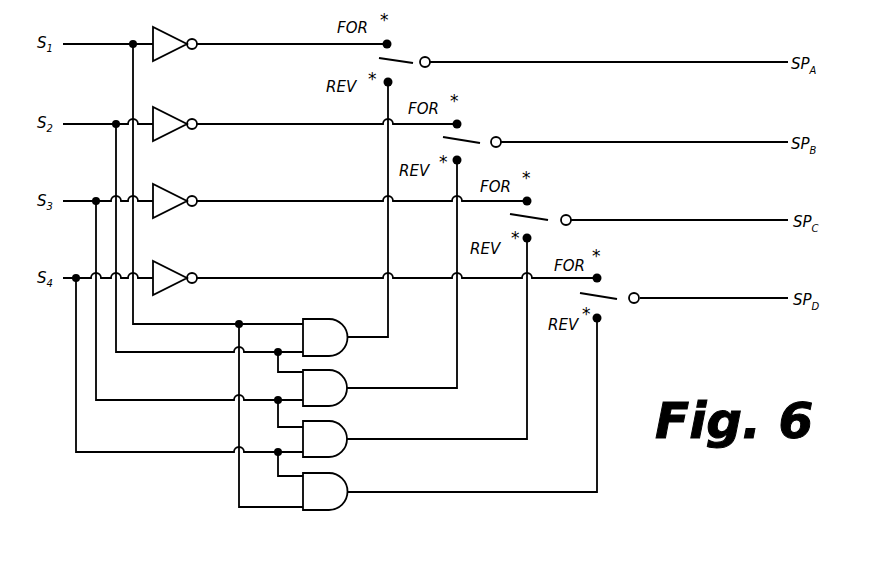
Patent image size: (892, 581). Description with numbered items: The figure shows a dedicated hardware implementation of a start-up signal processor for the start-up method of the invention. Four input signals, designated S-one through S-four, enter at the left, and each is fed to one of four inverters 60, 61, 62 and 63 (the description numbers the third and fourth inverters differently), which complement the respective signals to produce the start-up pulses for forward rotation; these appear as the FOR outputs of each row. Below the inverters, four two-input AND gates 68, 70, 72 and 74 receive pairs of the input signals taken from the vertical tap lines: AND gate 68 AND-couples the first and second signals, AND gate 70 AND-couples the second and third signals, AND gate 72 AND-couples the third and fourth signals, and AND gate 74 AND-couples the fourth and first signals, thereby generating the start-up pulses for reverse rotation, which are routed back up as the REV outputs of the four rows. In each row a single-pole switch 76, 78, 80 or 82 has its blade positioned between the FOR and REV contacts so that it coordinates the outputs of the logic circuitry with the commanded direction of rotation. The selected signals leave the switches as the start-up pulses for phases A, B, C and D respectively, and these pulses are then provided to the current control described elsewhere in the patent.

The inverter 60 is at (176, 34).
The inverter 61 is at (173, 114).
The inverter 62 is at (173, 192).
The inverter 63 is at (173, 269).
The AND gate 68 is at (341, 323).
The AND gate 70 is at (350, 381).
The AND gate 72 is at (350, 434).
The AND gate 74 is at (350, 487).
The switch 76 is at (413, 56).
The switch 78 is at (479, 136).
The switch 80 is at (547, 213).
The switch 82 is at (617, 292).